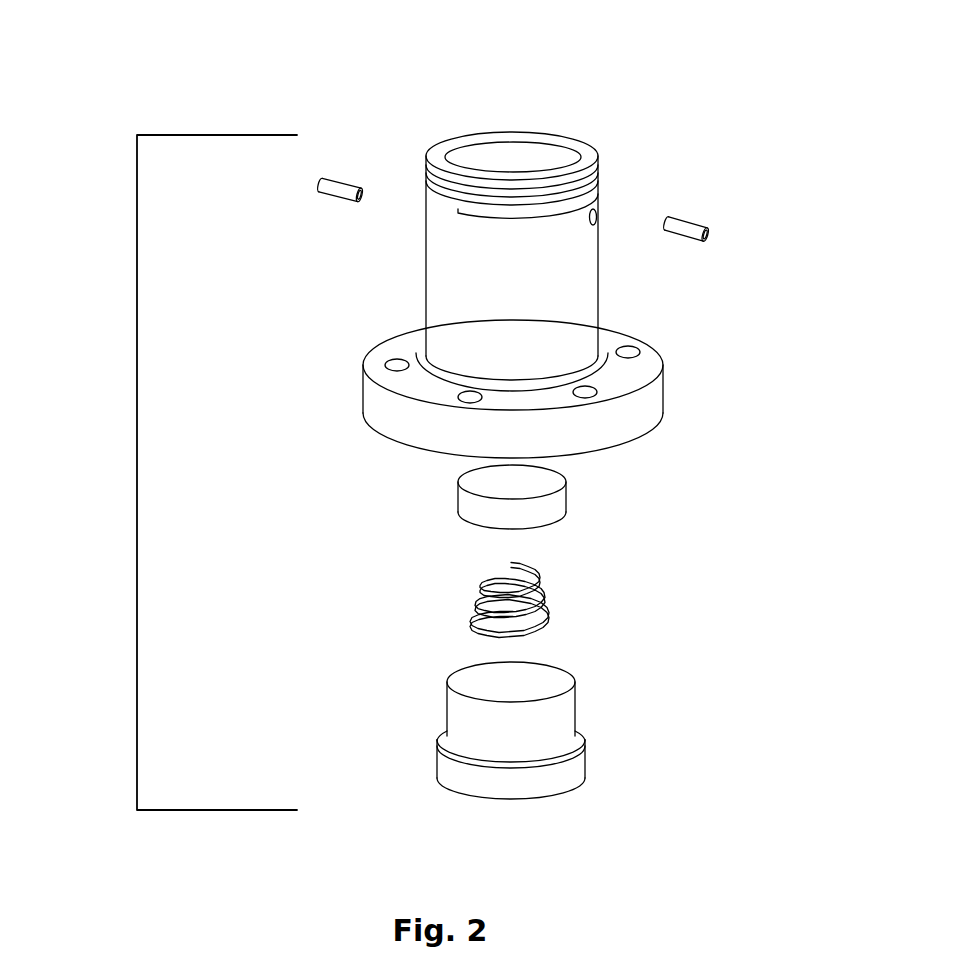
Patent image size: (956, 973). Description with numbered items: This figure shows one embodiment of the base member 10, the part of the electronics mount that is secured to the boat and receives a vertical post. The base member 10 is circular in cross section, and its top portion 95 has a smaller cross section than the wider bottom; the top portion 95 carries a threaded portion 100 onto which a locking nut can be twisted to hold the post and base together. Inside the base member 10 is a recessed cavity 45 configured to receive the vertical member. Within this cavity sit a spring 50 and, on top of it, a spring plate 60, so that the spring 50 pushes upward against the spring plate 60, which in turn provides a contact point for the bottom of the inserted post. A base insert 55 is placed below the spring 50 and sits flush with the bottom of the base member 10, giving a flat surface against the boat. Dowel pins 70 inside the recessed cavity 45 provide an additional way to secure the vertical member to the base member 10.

The base member 10 is at (137, 463).
The recessed cavity 45 is at (508, 165).
The spring 50 is at (548, 588).
The base insert 55 is at (578, 713).
The spring plate 60 is at (566, 481).
The dowel pins 70 is at (332, 176).
The top portion 95 is at (425, 232).
The threaded portion 100 is at (598, 177).